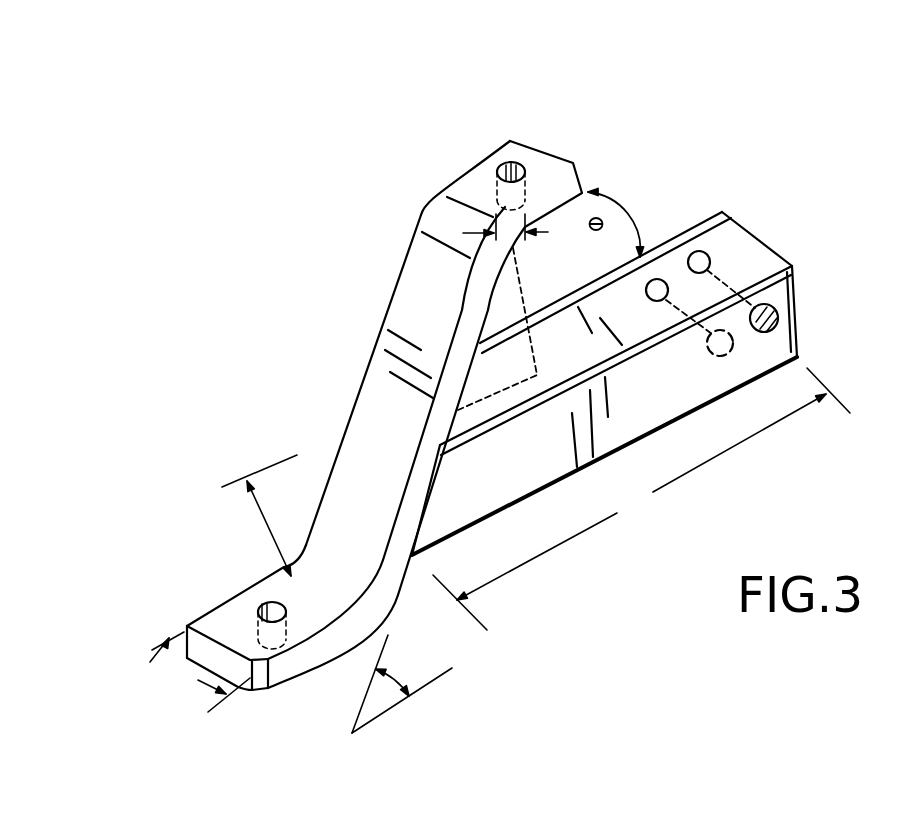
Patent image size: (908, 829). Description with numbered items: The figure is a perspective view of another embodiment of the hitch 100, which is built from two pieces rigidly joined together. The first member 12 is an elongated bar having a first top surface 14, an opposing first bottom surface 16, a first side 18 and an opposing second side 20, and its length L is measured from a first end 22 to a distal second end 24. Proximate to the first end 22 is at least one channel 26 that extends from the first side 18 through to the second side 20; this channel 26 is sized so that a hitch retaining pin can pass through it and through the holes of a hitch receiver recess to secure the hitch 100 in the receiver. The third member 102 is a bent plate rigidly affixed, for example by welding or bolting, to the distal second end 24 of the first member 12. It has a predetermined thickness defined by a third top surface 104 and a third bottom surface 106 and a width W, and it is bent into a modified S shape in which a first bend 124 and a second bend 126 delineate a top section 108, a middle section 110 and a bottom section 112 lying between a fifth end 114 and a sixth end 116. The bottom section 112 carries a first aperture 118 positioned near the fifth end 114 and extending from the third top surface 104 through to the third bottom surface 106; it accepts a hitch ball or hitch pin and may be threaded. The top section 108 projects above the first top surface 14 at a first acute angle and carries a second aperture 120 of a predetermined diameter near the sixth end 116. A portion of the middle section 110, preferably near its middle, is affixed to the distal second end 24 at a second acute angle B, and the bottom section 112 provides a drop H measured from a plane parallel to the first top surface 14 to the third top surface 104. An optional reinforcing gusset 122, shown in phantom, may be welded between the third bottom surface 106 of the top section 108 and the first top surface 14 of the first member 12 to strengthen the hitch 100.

The hitch 100 is at (600, 88).
The third member 102 is at (352, 226).
The third top surface 104 is at (258, 588).
The third bottom surface 106 is at (297, 672).
The top section 108 is at (477, 182).
The middle section 110 is at (387, 376).
The bottom section 112 is at (215, 622).
The fifth end 114 is at (191, 622).
The sixth end 116 is at (584, 190).
The first aperture 118 is at (258, 598).
The second aperture 120 is at (511, 162).
The reinforcing gusset 122 is at (493, 370).
The first bend 124 is at (424, 212).
The second bend 126 is at (345, 597).
The first member 12 is at (713, 192).
The first top surface 14 is at (753, 247).
The first bottom surface 16 is at (787, 366).
The first side 18 is at (671, 385).
The second side 20 is at (722, 212).
The first end 22 is at (797, 311).
The distal second end 24 is at (435, 484).
The channel 26 is at (763, 333).